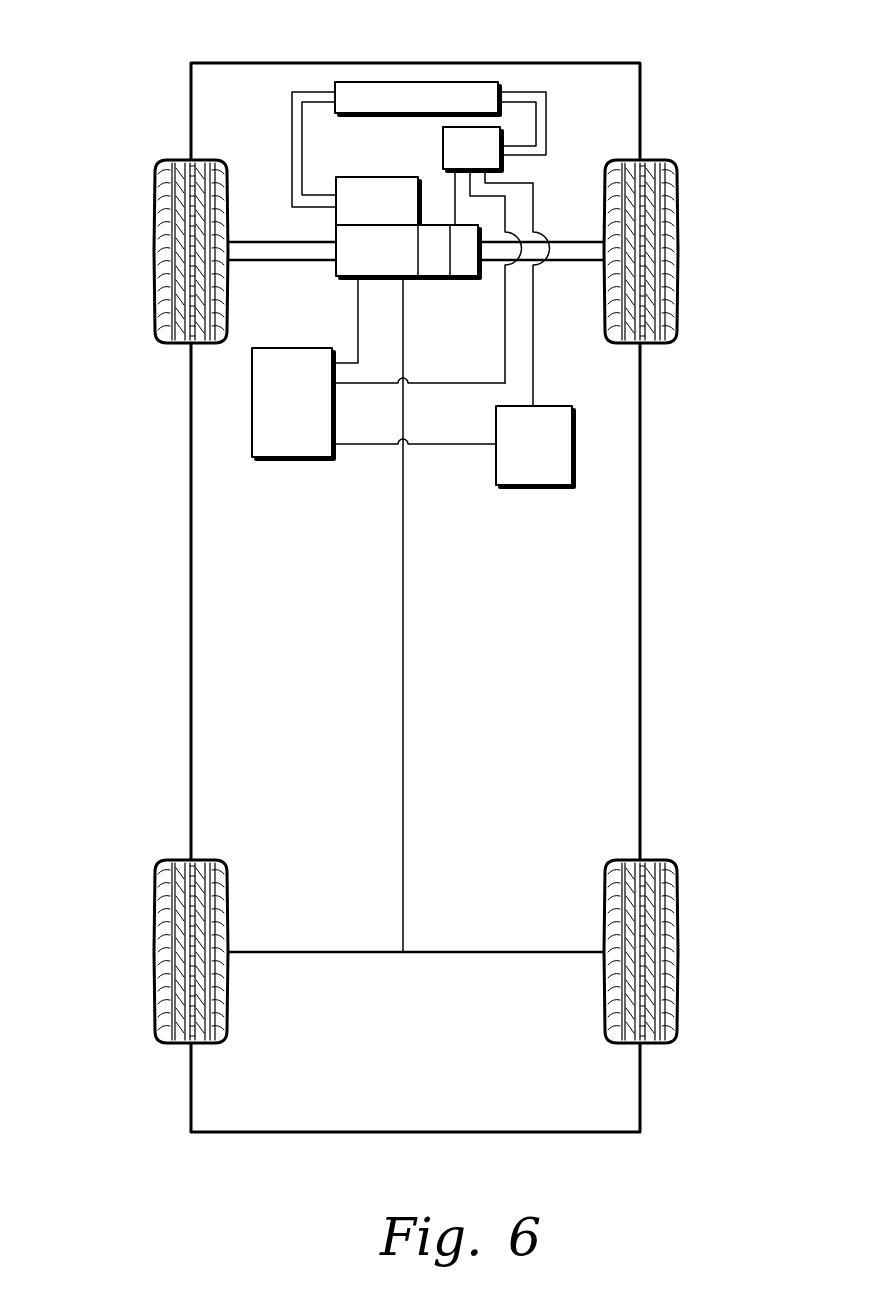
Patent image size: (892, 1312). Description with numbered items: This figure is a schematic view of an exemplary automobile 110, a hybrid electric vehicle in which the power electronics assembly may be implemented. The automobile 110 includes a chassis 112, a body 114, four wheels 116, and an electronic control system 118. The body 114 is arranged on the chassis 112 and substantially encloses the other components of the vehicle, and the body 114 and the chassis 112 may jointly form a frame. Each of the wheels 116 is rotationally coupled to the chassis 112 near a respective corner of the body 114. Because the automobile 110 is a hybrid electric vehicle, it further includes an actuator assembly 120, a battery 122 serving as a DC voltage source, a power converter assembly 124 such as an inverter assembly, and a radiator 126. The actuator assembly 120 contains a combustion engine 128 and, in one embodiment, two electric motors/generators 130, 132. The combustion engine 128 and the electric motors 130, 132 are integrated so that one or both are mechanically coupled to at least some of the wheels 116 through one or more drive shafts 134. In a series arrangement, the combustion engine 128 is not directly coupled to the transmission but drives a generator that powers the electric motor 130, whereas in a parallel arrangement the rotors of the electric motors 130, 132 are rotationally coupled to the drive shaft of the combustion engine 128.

The automobile 110 is at (675, 72).
The chassis 112 is at (403, 795).
The body 114 is at (191, 452).
The wheels 116 is at (165, 232).
The electronic control system 118 is at (289, 443).
The actuator assembly 120 is at (419, 299).
The battery 122 is at (537, 478).
The power converter assembly 124 is at (457, 152).
The radiator 126 is at (382, 90).
The combustion engine 128 is at (377, 187).
The electric motor/generator 130 is at (437, 267).
The electric motor/generator 132 is at (466, 268).
The drive shafts 134 is at (255, 248).